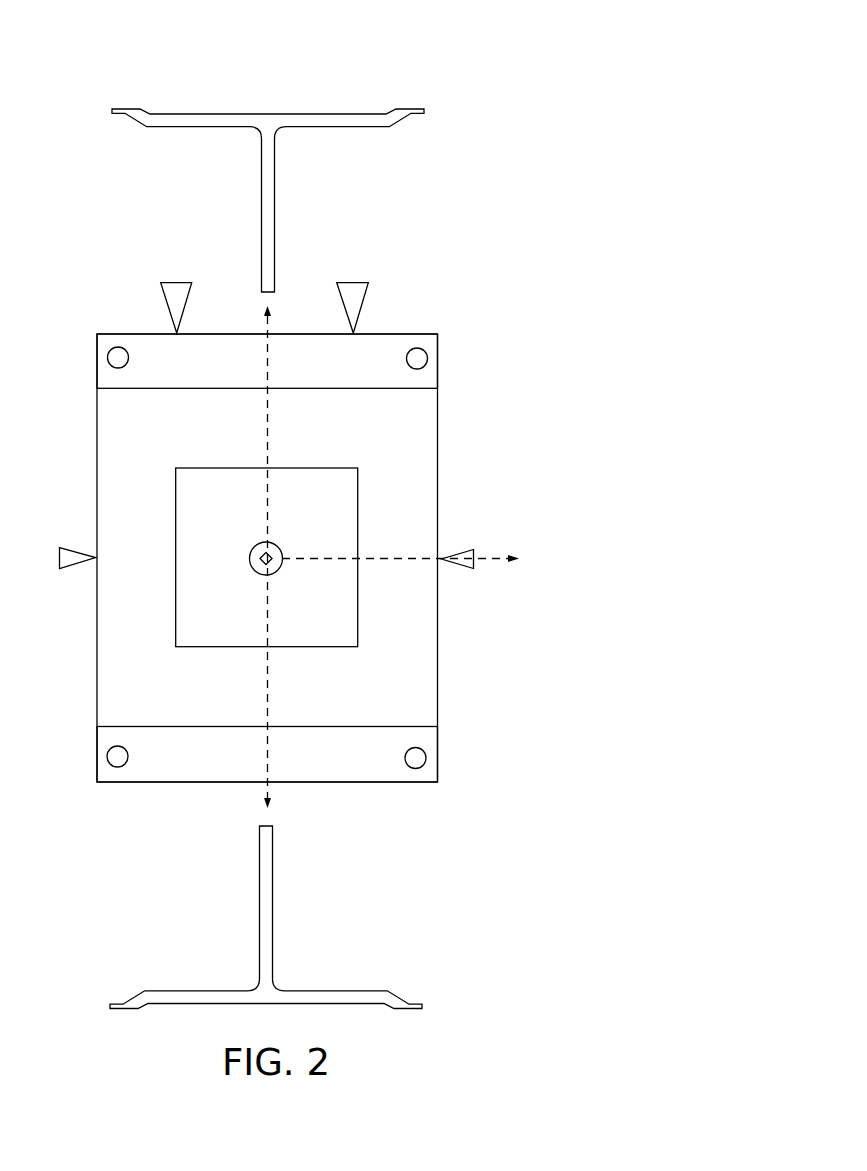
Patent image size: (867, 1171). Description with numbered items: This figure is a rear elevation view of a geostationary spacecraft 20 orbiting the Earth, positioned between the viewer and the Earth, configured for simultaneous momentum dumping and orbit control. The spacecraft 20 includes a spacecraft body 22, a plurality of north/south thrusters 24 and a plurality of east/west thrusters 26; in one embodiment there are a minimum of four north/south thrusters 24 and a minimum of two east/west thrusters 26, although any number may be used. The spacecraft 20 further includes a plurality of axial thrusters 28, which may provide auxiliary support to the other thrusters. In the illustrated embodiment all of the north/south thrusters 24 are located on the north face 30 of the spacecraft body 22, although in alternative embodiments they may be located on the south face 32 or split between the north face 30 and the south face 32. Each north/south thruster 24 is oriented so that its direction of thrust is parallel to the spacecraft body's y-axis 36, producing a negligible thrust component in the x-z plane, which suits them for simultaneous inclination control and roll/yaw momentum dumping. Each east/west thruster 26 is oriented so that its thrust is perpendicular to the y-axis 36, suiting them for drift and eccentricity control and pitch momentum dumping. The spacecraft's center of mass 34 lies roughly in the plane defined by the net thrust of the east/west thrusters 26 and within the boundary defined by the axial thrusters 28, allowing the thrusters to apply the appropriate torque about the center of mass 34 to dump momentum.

The spacecraft 20 is at (565, 150).
The spacecraft body 22 is at (420, 714).
The north/south thrusters 24 is at (178, 282).
The east/west thrusters 26 is at (72, 548).
The axial thrusters 28 is at (107, 360).
The north face 30 is at (112, 333).
The south face 32 is at (413, 783).
The center of mass 34 is at (270, 574).
The y-axis 36 is at (268, 414).